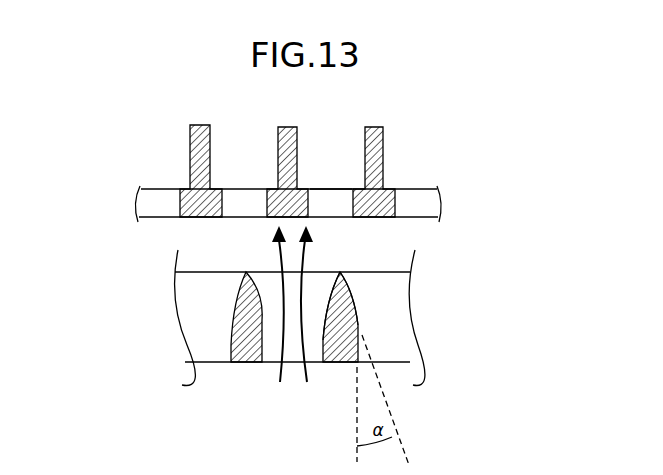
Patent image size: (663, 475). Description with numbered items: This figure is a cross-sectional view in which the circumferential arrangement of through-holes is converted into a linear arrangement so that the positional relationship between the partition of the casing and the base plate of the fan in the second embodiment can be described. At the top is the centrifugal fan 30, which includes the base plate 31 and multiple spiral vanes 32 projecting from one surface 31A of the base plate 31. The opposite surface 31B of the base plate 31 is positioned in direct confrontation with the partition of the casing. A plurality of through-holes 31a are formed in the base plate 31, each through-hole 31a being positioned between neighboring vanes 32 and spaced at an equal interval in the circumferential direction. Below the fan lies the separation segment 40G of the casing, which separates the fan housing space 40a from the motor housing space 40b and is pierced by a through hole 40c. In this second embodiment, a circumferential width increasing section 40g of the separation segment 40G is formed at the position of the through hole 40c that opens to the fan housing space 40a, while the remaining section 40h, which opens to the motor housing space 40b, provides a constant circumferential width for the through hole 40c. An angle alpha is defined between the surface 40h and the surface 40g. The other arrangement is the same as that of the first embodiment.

The centrifugal fan 30 is at (318, 167).
The base plate 31 is at (318, 181).
The one surface of the base plate 31A is at (424, 188).
The opposite surface of the base plate 31B is at (424, 218).
The through-hole 31a is at (330, 188).
The spiral vane 32 is at (384, 138).
The separation segment 40G is at (280, 339).
The fan housing space 40a is at (185, 234).
The motor housing space 40b is at (240, 352).
The circumferential width increasing section 40g is at (331, 290).
The remaining section 40h is at (330, 327).
The through hole 40c is at (322, 345).